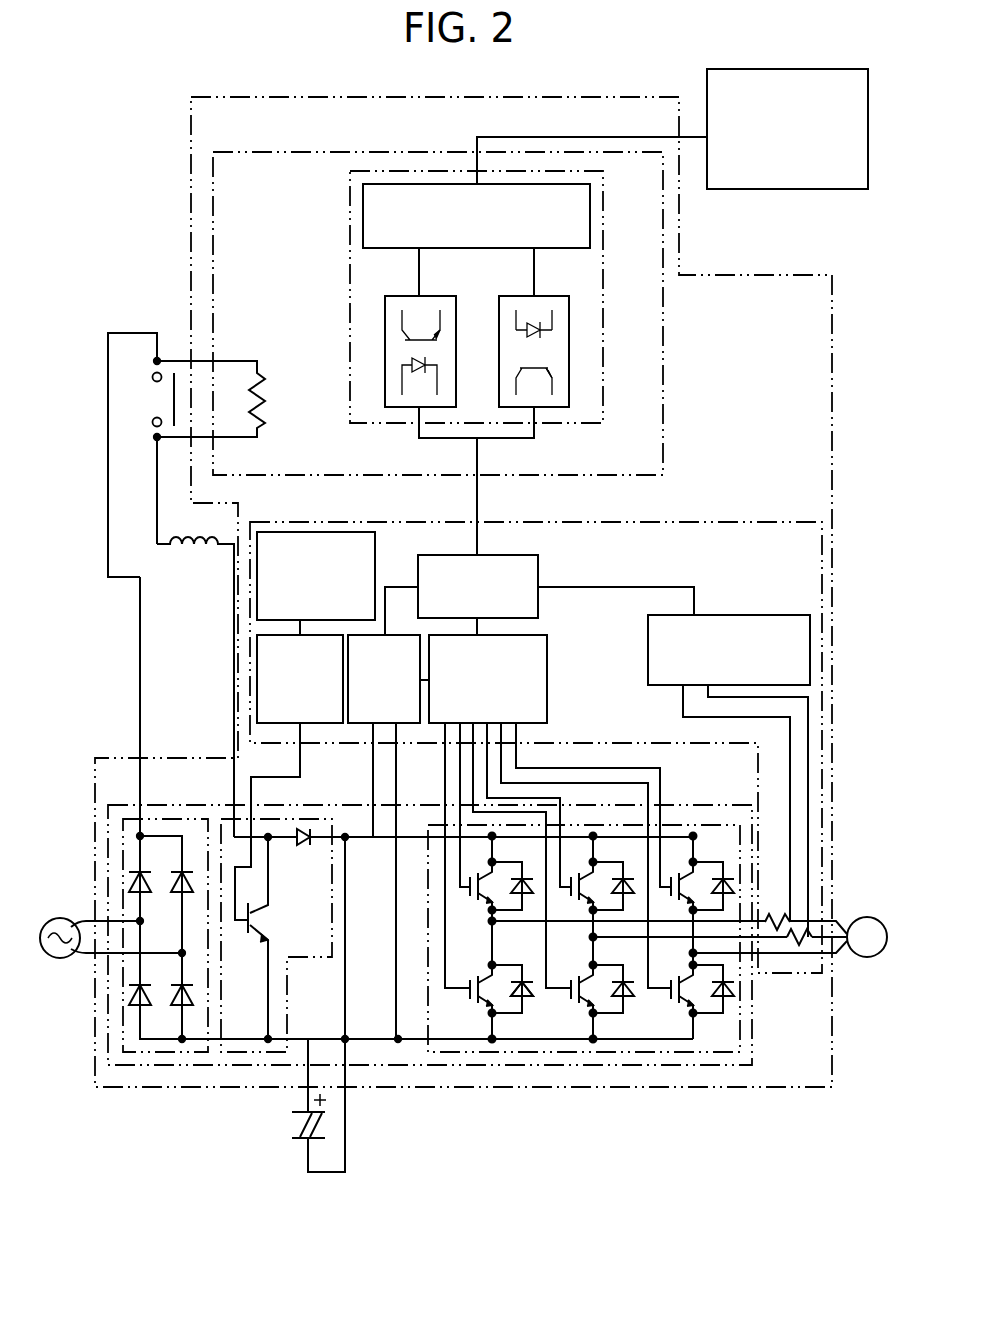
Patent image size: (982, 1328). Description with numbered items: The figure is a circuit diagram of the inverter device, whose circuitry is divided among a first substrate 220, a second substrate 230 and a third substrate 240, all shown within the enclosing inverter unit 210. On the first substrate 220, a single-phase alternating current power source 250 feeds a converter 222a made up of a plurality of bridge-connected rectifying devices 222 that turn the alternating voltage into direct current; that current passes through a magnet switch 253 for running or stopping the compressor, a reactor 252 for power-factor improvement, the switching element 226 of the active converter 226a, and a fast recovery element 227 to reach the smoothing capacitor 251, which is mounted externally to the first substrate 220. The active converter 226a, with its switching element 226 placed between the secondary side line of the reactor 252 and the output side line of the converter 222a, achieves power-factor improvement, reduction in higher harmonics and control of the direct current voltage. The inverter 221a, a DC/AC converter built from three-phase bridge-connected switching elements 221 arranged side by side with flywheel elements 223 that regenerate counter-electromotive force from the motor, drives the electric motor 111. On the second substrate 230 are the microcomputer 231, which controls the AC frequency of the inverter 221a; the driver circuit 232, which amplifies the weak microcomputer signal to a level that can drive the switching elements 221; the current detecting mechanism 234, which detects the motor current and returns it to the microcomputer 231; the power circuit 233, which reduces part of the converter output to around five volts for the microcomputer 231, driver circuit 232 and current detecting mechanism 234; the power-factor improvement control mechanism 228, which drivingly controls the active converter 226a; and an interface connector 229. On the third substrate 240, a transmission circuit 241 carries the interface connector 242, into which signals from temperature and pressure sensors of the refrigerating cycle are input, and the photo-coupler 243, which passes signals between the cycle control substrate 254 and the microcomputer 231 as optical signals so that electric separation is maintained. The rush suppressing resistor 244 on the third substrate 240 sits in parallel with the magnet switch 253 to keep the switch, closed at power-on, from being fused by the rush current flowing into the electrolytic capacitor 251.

The electric motor 111 is at (861, 958).
The control unit (outer enclosure) 210 is at (191, 162).
The first substrate 220 is at (613, 1067).
The switching element 221 is at (473, 1003).
The inverter 221a is at (741, 1065).
The rectifying devices 222 is at (148, 1008).
The converter 222a is at (121, 1065).
The flywheel elements 223 is at (533, 1003).
The switching element 226 is at (258, 935).
The active converter 226a is at (222, 1068).
The fast recovery element 227 is at (305, 850).
The power-factor improvement control mechanism 228 is at (257, 690).
The interface connector 229 is at (316, 530).
The second substrate 230 is at (714, 520).
The microcomputer 231 is at (540, 578).
The driver circuit 232 is at (552, 668).
The power circuit 233 is at (357, 727).
The current detecting mechanism 234 is at (735, 614).
The third substrate 240 is at (667, 410).
The transmission circuit 241 is at (350, 259).
The interface connector 242 is at (363, 194).
The photo-coupler 243 is at (499, 318).
The rush suppressing resistor 244 is at (262, 366).
The alternating current power source 250 is at (61, 958).
The smoothing capacitor 251 is at (298, 1140).
The reactor 252 is at (190, 563).
The magnet switch 253 is at (150, 424).
The cycle control substrate 254 is at (782, 189).